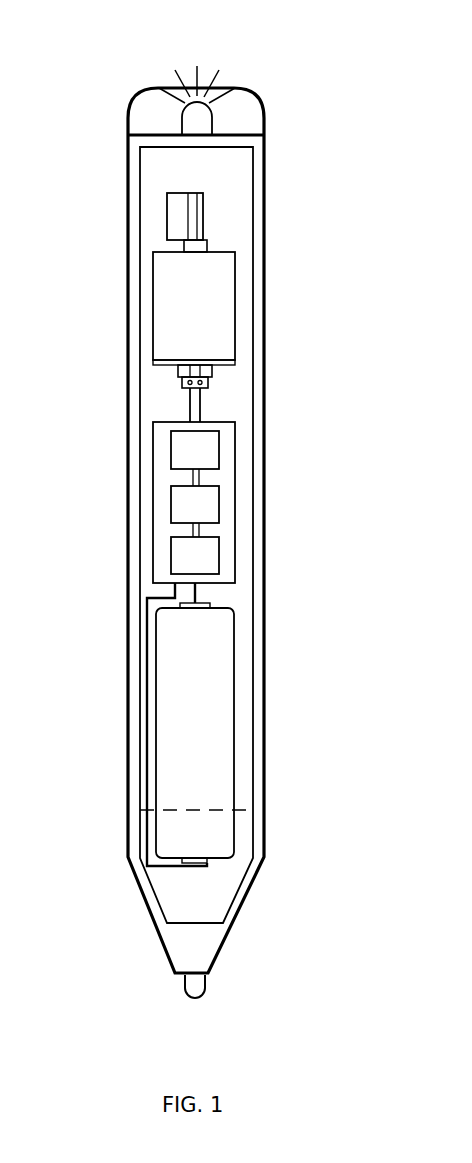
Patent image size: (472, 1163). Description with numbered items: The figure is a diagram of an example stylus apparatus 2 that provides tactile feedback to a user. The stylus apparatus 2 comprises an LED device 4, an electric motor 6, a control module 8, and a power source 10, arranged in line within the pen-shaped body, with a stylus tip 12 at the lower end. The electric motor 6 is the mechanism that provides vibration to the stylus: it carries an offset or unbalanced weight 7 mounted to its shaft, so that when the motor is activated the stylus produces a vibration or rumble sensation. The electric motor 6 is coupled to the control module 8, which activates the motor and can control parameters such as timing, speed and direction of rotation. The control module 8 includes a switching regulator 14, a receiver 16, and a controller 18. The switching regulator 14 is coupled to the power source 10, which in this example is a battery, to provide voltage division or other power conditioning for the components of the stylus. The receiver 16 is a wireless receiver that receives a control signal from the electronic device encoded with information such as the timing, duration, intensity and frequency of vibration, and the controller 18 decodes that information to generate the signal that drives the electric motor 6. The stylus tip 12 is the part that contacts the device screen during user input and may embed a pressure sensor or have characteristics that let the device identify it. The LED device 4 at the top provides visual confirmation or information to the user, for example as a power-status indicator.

The stylus apparatus 2 is at (197, 42).
The LED device 4 is at (192, 125).
The electric motor 6 is at (168, 307).
The offset or unbalanced weight 7 is at (185, 207).
The control module 8 is at (193, 491).
The power source 10 is at (170, 705).
The stylus tip 12 is at (185, 990).
The switching regulator 14 is at (213, 450).
The receiver 16 is at (213, 503).
The controller 18 is at (213, 558).